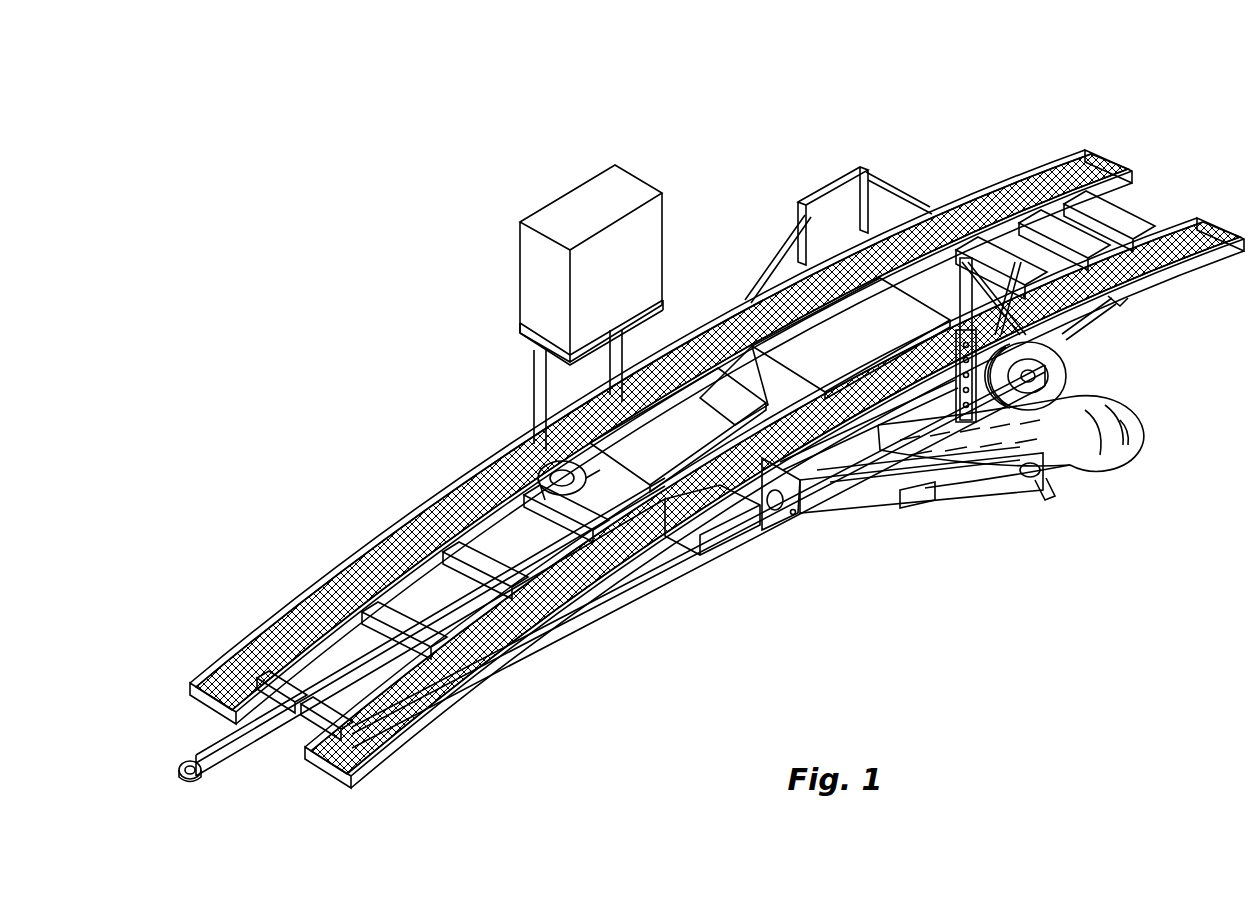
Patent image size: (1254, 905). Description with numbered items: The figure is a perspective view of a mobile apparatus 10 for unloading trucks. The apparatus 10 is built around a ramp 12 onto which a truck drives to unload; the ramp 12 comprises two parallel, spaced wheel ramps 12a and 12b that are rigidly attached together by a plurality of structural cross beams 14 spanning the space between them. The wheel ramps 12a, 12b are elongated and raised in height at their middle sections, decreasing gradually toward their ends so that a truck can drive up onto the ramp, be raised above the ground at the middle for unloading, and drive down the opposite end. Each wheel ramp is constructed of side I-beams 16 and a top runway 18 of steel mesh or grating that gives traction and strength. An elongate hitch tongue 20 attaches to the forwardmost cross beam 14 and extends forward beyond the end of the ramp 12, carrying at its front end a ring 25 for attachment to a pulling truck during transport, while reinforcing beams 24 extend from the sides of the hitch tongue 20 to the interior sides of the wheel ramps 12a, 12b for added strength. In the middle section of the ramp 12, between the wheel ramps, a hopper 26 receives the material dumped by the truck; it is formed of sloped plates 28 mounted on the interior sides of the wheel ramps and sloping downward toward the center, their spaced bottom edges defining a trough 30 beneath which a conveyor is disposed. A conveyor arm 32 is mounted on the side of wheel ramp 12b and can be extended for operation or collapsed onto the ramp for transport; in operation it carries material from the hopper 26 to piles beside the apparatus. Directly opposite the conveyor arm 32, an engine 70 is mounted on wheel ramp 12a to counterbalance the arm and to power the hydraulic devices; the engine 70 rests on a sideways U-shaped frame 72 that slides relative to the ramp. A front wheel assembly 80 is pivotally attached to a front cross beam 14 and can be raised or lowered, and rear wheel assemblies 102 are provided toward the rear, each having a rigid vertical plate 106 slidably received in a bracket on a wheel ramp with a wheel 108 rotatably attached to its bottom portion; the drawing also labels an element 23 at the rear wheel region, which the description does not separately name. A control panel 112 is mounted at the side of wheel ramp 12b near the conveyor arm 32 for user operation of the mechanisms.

The mobile apparatus 10 is at (755, 145).
The ramp 12 is at (338, 528).
The wheel ramp 12a is at (470, 458).
The wheel ramp 12b is at (590, 610).
The structural cross beams 14 is at (537, 623).
The side I-beams 16 is at (633, 560).
The top runway 18 is at (1180, 236).
The hitch tongue 20 is at (235, 760).
The fender 23 is at (1092, 478).
The reinforcing beams 24 is at (298, 708).
The ring 25 is at (183, 765).
The hopper 26 is at (734, 358).
The sloped plates 28 is at (785, 368).
The trough 30 is at (705, 393).
The conveyor arm 32 is at (989, 516).
The engine 70 is at (592, 205).
The frame 72 is at (540, 348).
The front wheel assembly 80 is at (525, 490).
The rear wheel assemblies 102 is at (884, 162).
The rigid vertical plate 106 is at (1100, 340).
The wheel 108 is at (785, 240).
The control panel 112 is at (700, 515).